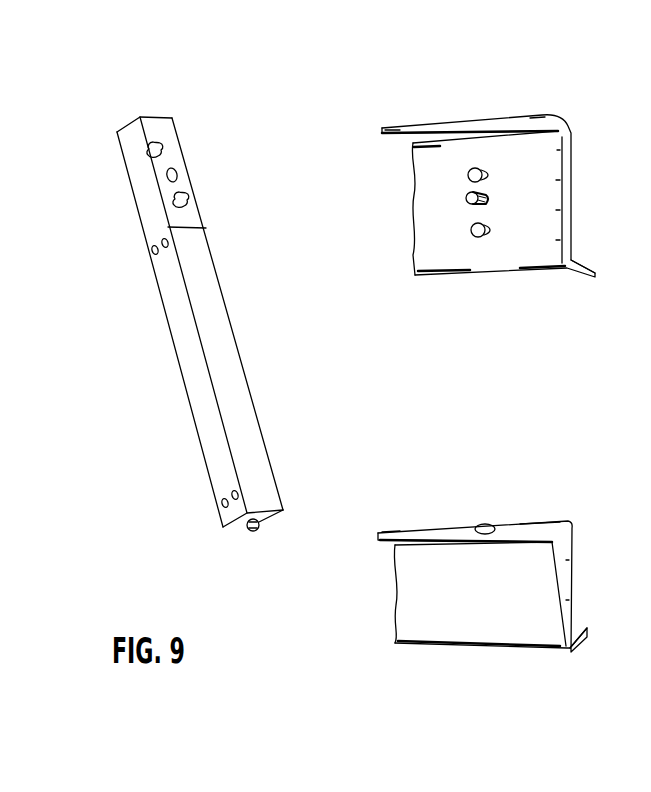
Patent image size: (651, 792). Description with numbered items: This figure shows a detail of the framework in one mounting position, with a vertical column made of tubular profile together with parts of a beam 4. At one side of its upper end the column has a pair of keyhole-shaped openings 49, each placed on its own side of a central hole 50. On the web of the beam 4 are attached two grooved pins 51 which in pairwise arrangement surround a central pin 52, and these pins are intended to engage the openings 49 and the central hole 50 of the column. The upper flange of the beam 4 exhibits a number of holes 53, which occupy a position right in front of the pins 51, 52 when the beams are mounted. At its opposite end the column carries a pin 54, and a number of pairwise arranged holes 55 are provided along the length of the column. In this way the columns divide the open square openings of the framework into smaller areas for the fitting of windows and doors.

The beam 4 is at (538, 197).
The keyhole-shaped opening 49 is at (163, 148).
The central hole 50 is at (176, 175).
The pin with groove 51 is at (470, 167).
The central pin 52 is at (466, 198).
The hole 53 is at (487, 532).
The pin 54 is at (253, 532).
The pairwise arranged holes 55 is at (152, 250).